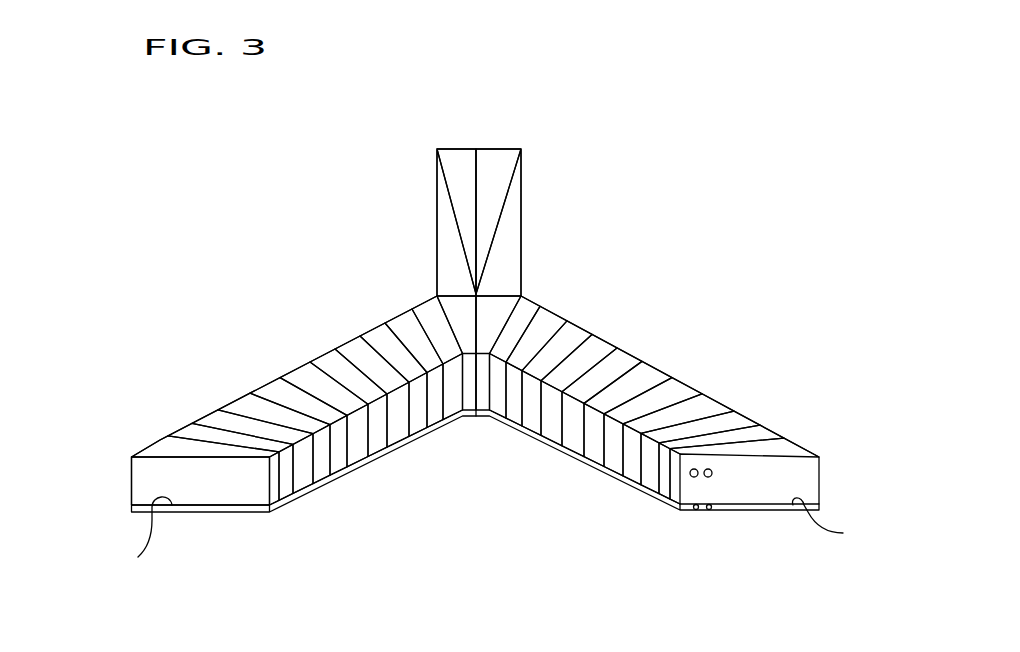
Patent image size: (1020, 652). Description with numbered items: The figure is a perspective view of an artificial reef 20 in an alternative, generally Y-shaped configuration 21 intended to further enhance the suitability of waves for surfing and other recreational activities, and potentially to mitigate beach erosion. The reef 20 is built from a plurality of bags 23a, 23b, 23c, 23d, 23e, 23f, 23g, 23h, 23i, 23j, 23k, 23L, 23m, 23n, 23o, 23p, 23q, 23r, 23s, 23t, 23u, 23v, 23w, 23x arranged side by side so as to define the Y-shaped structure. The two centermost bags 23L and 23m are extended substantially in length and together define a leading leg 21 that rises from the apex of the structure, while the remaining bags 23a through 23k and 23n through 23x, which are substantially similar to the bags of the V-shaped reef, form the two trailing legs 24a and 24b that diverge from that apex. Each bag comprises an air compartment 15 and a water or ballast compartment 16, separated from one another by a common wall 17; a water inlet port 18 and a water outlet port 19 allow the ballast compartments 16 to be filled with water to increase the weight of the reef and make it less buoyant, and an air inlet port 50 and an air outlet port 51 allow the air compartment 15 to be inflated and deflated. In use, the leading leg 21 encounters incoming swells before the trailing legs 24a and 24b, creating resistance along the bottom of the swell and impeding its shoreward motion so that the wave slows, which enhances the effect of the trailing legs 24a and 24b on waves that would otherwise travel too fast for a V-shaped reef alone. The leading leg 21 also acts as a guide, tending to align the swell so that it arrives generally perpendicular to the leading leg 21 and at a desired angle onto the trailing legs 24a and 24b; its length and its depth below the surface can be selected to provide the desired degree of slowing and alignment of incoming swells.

The artificial reef 20 is at (672, 198).
The leading leg 21 is at (363, 163).
The bag 23a is at (143, 449).
The bag 23b is at (180, 430).
The bag 23c is at (207, 416).
The bag 23d is at (233, 402).
The bag 23e is at (265, 385).
The bag 23f is at (295, 370).
The bag 23g is at (323, 355).
The bag 23h is at (348, 342).
The bag 23i is at (373, 329).
The bag 23j is at (400, 315).
The bag 23k is at (425, 302).
The bag 23L is at (457, 148).
The bag 23m is at (500, 148).
The bag 23n is at (531, 301).
The bag 23o is at (554, 314).
The bag 23p is at (580, 328).
The bag 23q is at (604, 341).
The bag 23r is at (630, 355).
The bag 23s is at (657, 370).
The bag 23t is at (687, 386).
The bag 23u is at (717, 402).
The bag 23v is at (747, 418).
The bag 23w is at (772, 432).
The bag 23x is at (802, 448).
The air compartment 15 is at (128, 494).
The ballast compartment 16 is at (212, 510).
The common wall 17 is at (495, 533).
The water inlet port 18 is at (695, 511).
The water outlet port 19 is at (712, 510).
The air inlet port 50 is at (690, 476).
The air outlet port 51 is at (704, 478).
The trailing leg 24a is at (365, 518).
The trailing leg 24b is at (572, 508).